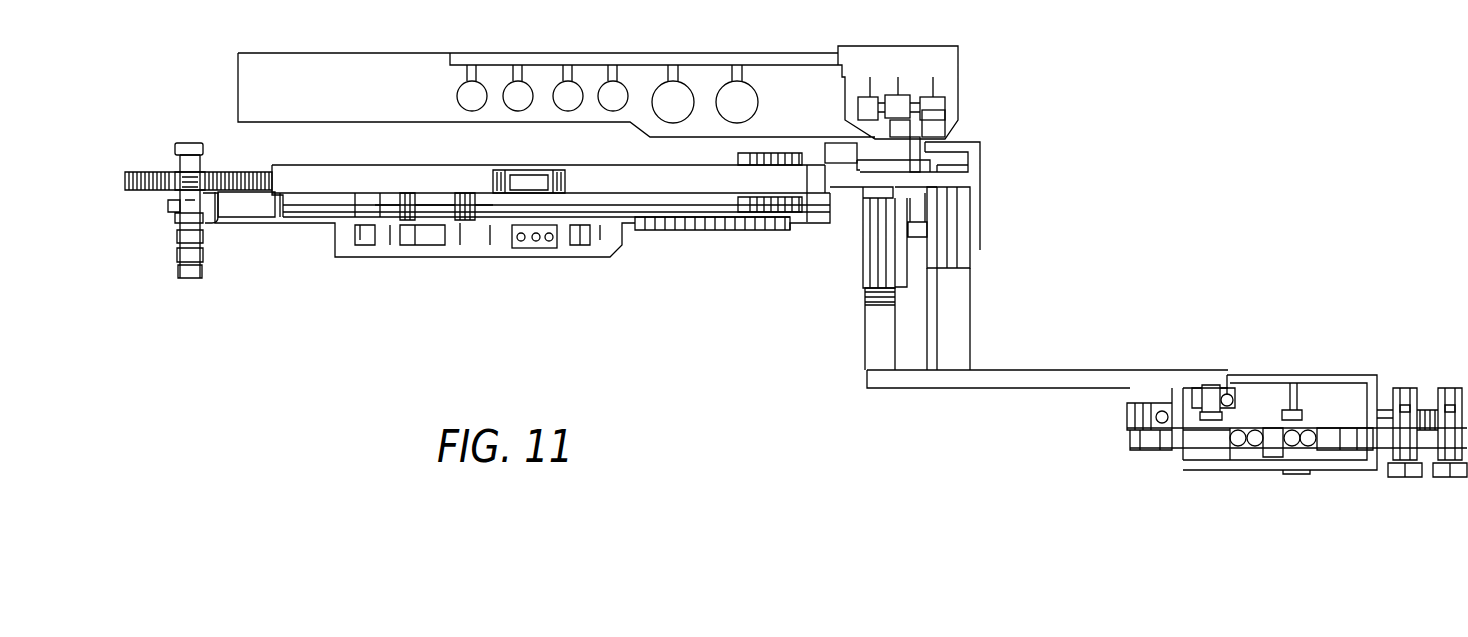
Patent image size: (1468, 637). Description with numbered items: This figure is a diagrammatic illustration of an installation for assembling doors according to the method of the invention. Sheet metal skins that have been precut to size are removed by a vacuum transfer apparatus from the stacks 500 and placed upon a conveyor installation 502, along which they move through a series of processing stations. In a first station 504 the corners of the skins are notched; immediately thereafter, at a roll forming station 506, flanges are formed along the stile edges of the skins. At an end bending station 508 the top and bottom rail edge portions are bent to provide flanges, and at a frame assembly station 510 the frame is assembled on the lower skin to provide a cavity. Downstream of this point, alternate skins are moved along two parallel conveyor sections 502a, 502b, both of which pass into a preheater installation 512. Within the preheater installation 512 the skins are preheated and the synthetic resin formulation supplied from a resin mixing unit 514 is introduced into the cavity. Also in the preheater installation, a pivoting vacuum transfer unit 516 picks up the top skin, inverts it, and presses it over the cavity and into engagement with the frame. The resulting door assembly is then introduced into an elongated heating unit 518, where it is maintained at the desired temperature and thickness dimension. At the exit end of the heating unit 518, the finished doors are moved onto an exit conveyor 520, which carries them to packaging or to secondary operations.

The stacks 500 is at (1405, 478).
The conveyor installation 502 is at (1052, 388).
The parallel conveyor section 502a is at (970, 357).
The parallel conveyor section 502b is at (877, 338).
The first station 504 is at (1347, 440).
The roll forming station 506 is at (1272, 447).
The end bending station 508 is at (1160, 420).
The frame assembly station 510 is at (970, 307).
The preheater installation 512 is at (970, 243).
The resin mixing unit 514 is at (958, 97).
The pivoting vacuum transfer unit 516 is at (875, 205).
The elongated heating unit 518 is at (700, 187).
The exit conveyor 520 is at (205, 300).